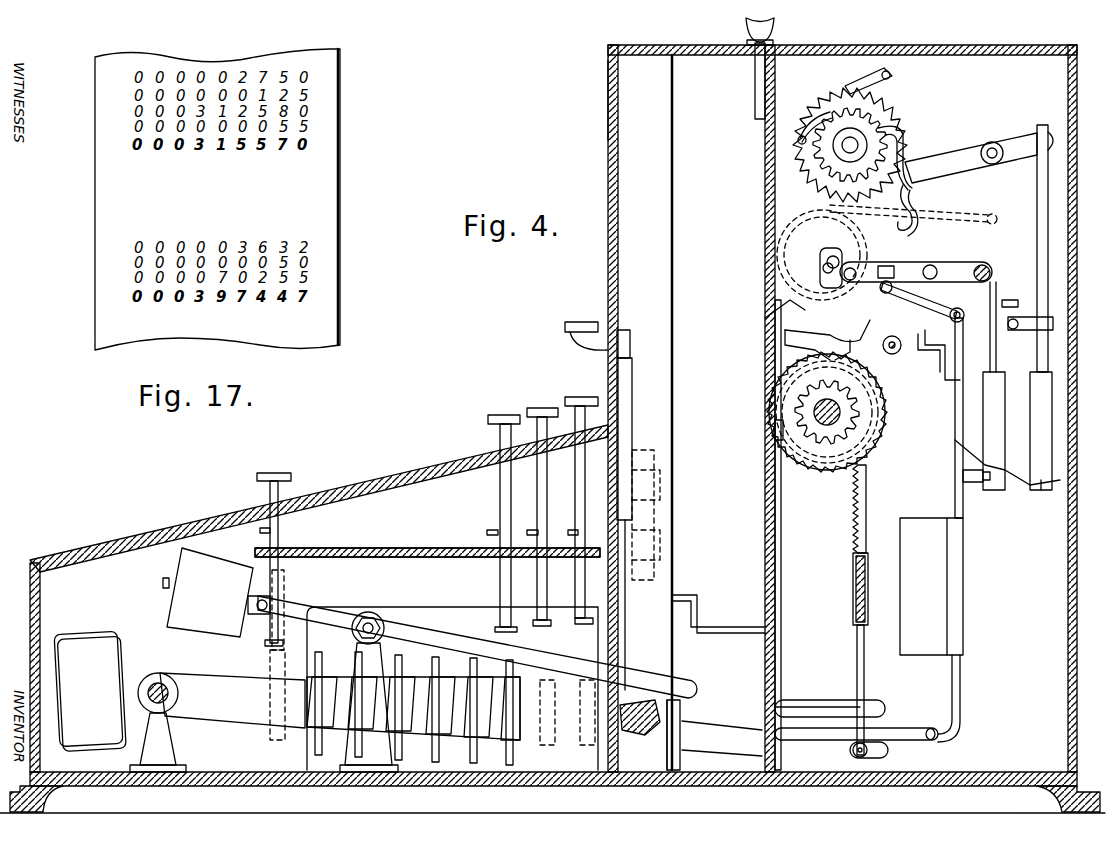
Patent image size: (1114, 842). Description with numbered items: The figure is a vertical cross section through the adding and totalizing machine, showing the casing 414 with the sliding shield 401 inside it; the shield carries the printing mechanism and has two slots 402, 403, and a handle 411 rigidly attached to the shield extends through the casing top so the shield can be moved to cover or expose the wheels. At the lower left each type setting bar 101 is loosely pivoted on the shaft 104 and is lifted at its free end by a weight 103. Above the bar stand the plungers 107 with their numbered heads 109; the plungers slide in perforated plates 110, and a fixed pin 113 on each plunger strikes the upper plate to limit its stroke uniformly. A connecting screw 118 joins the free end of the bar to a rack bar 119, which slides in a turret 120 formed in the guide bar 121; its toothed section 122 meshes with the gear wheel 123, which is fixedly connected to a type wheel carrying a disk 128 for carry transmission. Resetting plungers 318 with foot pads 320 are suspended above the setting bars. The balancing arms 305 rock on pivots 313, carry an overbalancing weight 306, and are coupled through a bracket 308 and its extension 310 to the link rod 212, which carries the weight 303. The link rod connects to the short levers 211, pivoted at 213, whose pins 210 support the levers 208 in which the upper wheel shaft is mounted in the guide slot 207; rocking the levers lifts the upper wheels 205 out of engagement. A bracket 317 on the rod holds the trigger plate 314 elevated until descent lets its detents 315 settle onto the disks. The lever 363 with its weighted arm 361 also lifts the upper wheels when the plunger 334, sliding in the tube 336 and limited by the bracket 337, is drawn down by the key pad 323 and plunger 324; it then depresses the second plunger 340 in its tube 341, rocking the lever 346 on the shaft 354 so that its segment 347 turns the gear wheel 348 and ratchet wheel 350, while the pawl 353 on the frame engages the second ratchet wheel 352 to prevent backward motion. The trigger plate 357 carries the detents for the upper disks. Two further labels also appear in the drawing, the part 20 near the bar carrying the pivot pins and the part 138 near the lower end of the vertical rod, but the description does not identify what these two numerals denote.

The handle 411 is at (777, 30).
The casing 414 is at (606, 100).
The ratchet wheel 350 is at (822, 172).
The gear wheel 348 is at (872, 128).
The trigger plate 357 is at (812, 118).
The pawl 353 is at (856, 86).
The second ratchet wheel 352 is at (903, 128).
The segment 347 is at (915, 194).
The rocking lever 346 is at (945, 162).
The shaft 354 is at (997, 146).
The second plunger 340 is at (1028, 248).
The guide slot 207 is at (822, 255).
The levers 208 is at (846, 262).
The wheels 205 is at (826, 270).
The bar 20 is at (932, 263).
The lever 363 is at (893, 266).
The pivot 213 is at (919, 273).
The arm 361 is at (988, 268).
The bracket 337 is at (1000, 278).
The pins 210 is at (887, 293).
The short levers 211 is at (935, 305).
The trigger plate 314 is at (985, 332).
The plunger 334 is at (1005, 365).
The slot 403 is at (770, 316).
The sliding shield 401 is at (776, 350).
The detents 315 is at (830, 357).
The extension 310 is at (900, 350).
The bracket 317 is at (935, 368).
The gear wheel 123 is at (812, 407).
The disk 128 is at (882, 428).
The slot 402 is at (776, 432).
The straight toothed section 122 is at (856, 492).
The turret 120 is at (853, 562).
The guide bar 121 is at (855, 598).
The rack bar 119 is at (866, 670).
The connecting screw 118 is at (890, 752).
The overbalancing weight 303 is at (912, 530).
The link rod 212 is at (962, 508).
The type setting bar 101 is at (815, 708).
The block 138 is at (985, 478).
The tube 336 is at (1005, 470).
The tube 341 is at (1045, 480).
The resetting plunger 318 is at (658, 478).
The plunger 324 is at (628, 346).
The key pad 323 is at (565, 326).
The bracket 308 is at (720, 630).
The foot pad 320 is at (640, 717).
The heads 109 is at (503, 413).
The plungers 107 is at (500, 505).
The fixed pin 113 is at (500, 530).
The plates 110 is at (392, 548).
The pivots 313 is at (372, 613).
The balancing arms 305 is at (573, 657).
The overbalancing weight 306 is at (182, 607).
The weight 103 is at (93, 648).
The shaft 104 is at (161, 685).